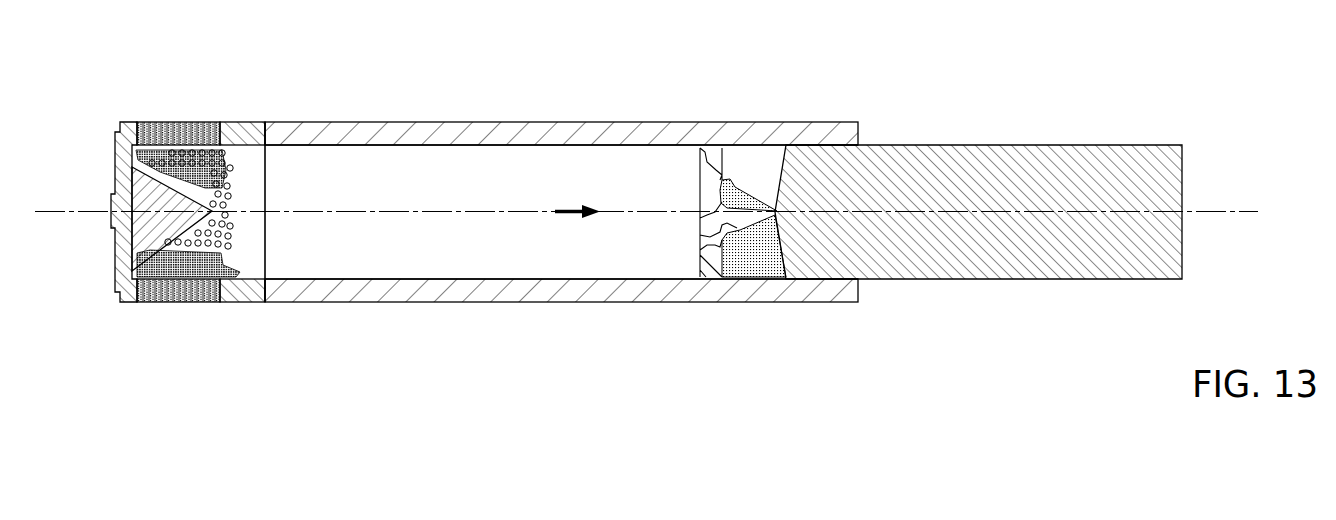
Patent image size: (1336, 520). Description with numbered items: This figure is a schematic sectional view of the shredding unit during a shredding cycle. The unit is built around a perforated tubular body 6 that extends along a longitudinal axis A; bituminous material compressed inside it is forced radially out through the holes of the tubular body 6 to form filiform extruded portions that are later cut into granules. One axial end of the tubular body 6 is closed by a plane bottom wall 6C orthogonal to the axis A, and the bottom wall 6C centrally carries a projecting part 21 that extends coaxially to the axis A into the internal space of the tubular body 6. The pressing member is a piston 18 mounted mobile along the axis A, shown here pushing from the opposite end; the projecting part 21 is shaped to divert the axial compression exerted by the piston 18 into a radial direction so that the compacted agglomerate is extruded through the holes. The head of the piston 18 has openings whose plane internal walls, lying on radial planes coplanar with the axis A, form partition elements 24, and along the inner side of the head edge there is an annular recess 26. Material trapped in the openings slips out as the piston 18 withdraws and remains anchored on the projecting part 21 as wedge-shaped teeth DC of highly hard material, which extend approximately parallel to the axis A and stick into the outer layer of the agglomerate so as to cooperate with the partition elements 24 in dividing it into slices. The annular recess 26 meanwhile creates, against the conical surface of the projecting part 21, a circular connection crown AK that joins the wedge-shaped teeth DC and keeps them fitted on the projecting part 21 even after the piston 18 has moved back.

The perforated tubular body 6 is at (272, 243).
The bottom wall 6C is at (117, 170).
The connection crown AK is at (182, 122).
The wedge-shaped teeth DC is at (240, 181).
The projecting part 21 is at (138, 238).
The annular recess 26 is at (702, 200).
The partition element 24 is at (738, 206).
The piston 18 is at (1127, 143).
The longitudinal axis A is at (1230, 212).